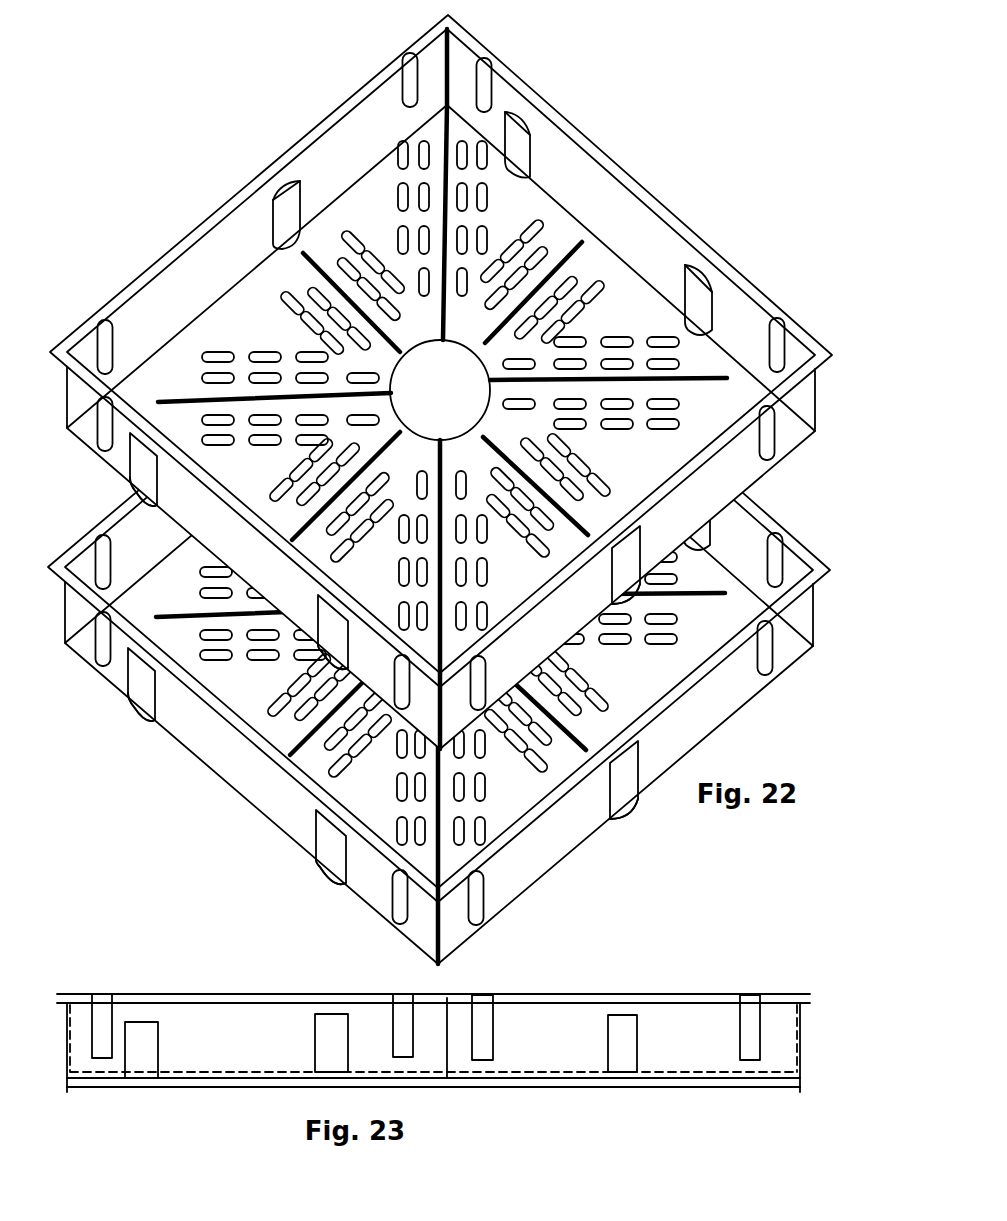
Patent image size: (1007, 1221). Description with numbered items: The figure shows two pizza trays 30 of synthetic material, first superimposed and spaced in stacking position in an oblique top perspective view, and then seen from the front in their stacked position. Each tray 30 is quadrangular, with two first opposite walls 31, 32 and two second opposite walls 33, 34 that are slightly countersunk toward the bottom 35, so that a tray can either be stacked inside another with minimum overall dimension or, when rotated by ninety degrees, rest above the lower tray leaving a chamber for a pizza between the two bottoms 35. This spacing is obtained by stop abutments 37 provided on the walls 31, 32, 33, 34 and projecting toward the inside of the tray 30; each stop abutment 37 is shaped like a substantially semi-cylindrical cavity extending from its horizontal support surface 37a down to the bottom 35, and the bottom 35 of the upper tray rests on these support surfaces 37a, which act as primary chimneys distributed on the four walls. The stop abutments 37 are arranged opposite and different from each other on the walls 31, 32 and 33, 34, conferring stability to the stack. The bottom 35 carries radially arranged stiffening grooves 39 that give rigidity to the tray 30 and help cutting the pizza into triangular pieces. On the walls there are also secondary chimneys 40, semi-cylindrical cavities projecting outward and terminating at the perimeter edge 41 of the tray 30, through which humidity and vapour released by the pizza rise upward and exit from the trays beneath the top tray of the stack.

In FIG. 22, the tray 30 is at (438, 489).
In FIG. 23, the tray 30 is at (456, 1033).
In FIG. 22, the first wall 31 is at (240, 532).
In FIG. 22, the first wall 32 is at (633, 227).
In FIG. 22, the second wall 33 is at (190, 272).
In FIG. 22, the second wall 34 is at (530, 625).
In FIG. 22, the bottom 35 is at (232, 338).
In FIG. 23, the bottom 35 is at (270, 1076).
In FIG. 22, the stop abutment 37 is at (523, 147).
In FIG. 23, the stop abutment 37 is at (330, 1030).
In FIG. 22, the horizontal support surface 37a is at (521, 116).
In FIG. 22, the stiffening groove 39 is at (436, 333).
In FIG. 23, the stiffening groove 39 is at (675, 1083).
In FIG. 23, the secondary chimney 40 is at (93, 1027).
In FIG. 22, the perimeter edge 41 is at (343, 107).
In FIG. 23, the perimeter edge 41 is at (808, 1012).